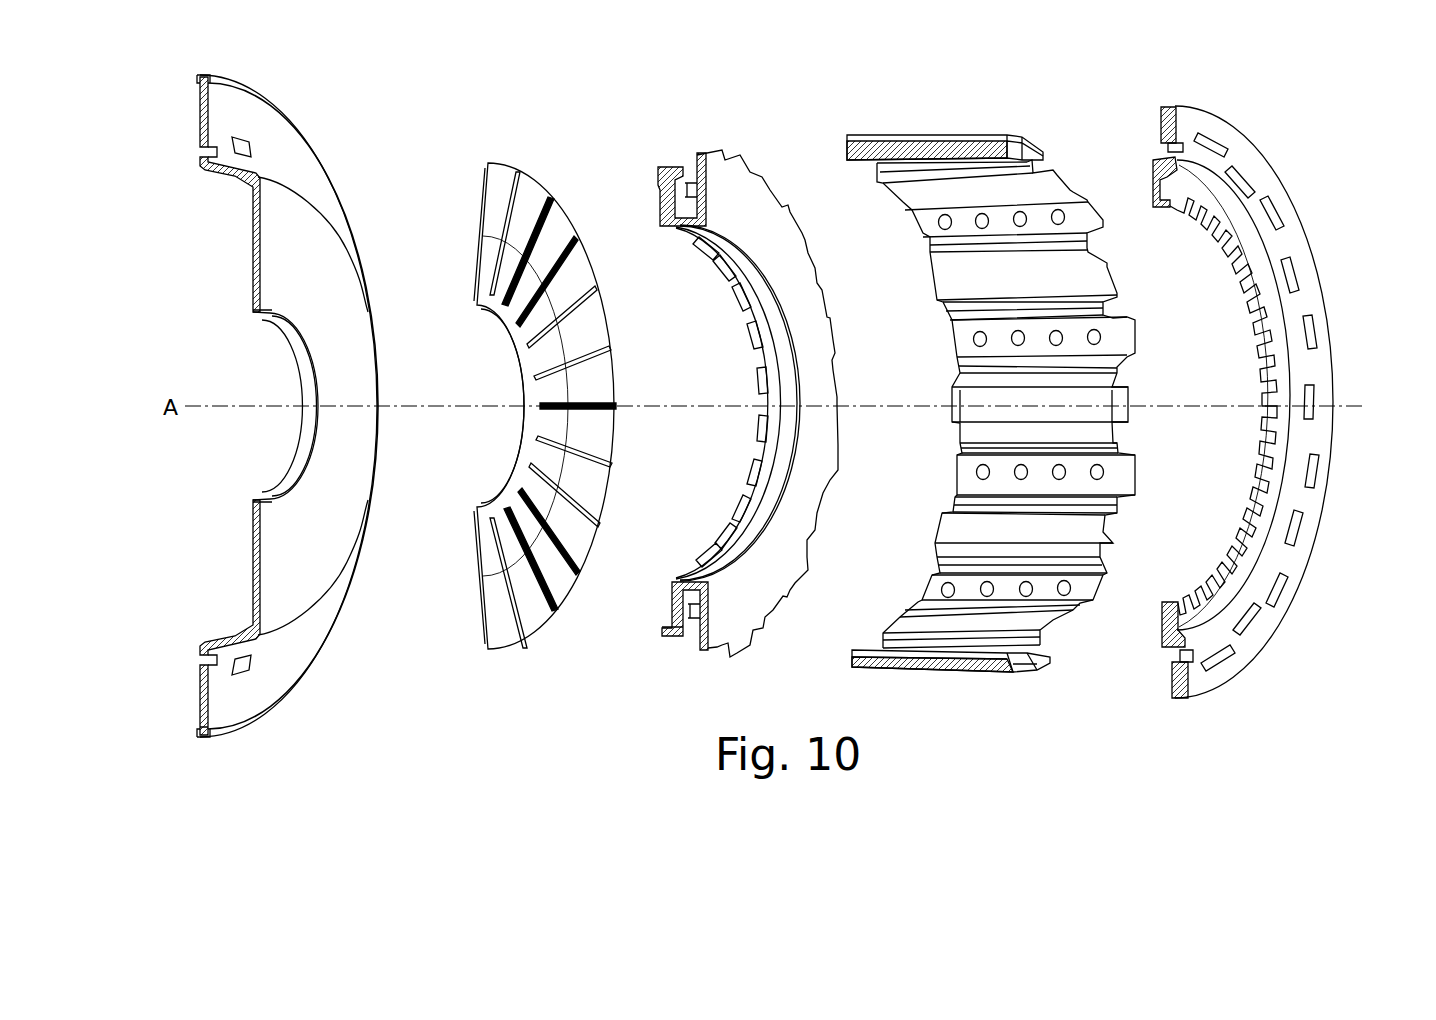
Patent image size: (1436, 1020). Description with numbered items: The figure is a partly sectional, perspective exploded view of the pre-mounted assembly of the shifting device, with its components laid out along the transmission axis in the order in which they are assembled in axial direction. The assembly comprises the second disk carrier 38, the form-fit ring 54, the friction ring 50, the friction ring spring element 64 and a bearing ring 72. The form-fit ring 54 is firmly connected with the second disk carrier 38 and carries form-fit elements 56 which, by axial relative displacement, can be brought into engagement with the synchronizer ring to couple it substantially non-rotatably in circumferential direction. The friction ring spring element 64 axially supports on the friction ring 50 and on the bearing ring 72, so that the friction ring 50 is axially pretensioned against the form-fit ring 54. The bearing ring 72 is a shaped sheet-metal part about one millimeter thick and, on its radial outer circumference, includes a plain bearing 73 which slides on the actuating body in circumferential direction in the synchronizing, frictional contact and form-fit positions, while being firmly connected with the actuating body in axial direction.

The second disk carrier 38 is at (953, 617).
The friction ring 50 is at (748, 202).
The form-fit ring 54 is at (1237, 152).
The form-fit elements 56 is at (1211, 263).
The friction ring spring element 64 is at (502, 610).
The bearing ring 72 is at (272, 262).
The plain bearing 73 is at (221, 744).